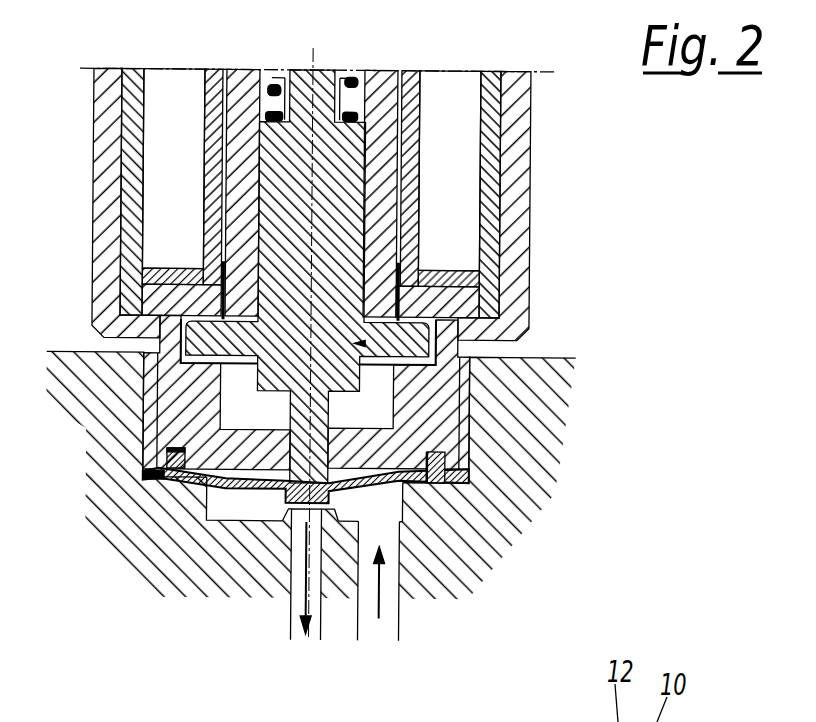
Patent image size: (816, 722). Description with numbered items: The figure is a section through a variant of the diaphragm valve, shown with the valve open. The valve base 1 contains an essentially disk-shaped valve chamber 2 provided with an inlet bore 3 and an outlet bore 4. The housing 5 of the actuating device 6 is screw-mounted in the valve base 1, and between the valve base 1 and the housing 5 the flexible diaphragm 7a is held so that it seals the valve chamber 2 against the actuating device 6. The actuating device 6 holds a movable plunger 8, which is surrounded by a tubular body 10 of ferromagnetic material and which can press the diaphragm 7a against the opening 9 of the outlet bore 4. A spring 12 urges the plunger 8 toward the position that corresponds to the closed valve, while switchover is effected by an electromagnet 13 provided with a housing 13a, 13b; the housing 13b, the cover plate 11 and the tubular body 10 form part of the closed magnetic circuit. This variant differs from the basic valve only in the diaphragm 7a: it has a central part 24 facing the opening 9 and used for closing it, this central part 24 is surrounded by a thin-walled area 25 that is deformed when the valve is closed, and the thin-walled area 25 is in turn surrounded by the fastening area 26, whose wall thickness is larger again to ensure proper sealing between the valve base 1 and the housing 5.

The valve base 1 is at (205, 570).
The valve chamber 2 is at (240, 500).
The inlet bore 3 is at (393, 613).
The outlet bore 4 is at (313, 630).
The housing 5 is at (512, 201).
The actuating device 6 is at (536, 128).
The diaphragm 7a is at (447, 493).
The plunger 8 is at (404, 354).
The opening 9 is at (293, 508).
The tubular body 10 is at (380, 88).
The cover plate 11 is at (165, 302).
The spring 12 is at (350, 79).
The electromagnet 13 is at (168, 142).
The housing 13a is at (206, 70).
The housing 13b is at (122, 177).
The central part 24 is at (323, 508).
The thin-walled area 25 is at (363, 488).
The fastening area 26 is at (160, 478).